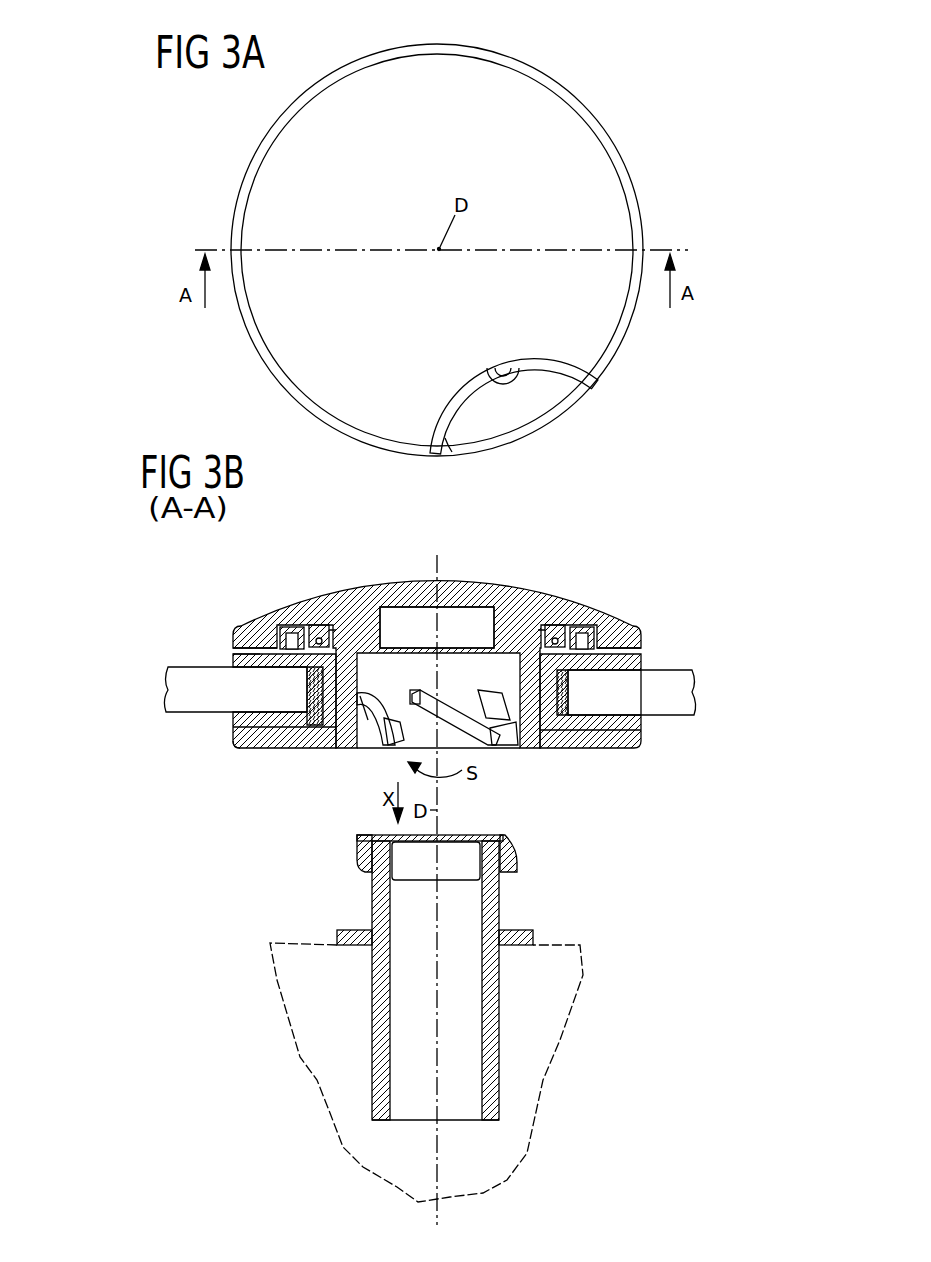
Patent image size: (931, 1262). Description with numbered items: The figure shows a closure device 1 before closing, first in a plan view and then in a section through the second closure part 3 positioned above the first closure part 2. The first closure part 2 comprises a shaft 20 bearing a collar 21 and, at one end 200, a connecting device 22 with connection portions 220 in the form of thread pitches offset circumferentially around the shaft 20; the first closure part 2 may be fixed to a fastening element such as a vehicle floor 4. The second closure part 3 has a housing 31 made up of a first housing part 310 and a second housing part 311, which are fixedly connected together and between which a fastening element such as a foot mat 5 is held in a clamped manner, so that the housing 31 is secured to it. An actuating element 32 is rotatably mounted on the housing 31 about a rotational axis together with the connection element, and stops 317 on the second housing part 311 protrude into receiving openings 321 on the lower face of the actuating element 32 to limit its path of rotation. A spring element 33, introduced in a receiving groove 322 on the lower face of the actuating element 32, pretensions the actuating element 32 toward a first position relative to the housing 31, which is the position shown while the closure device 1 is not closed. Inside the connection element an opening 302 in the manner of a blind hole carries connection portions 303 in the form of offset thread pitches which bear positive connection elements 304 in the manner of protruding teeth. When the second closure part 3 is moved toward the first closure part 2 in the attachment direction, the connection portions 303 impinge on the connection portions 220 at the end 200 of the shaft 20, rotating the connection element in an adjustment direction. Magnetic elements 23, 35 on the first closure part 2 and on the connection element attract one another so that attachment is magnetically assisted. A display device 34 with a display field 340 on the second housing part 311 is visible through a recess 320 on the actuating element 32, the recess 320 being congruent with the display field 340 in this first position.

In FIG. 3A, the closure device 1 is at (421, 241).
In FIG. 3B, the closure device 1 is at (172, 658).
In FIG. 3B, the first closure part 2 is at (464, 998).
In FIG. 3B, the second closure part 3 is at (449, 676).
In FIG. 3B, the vehicle floor 4 is at (315, 1057).
In FIG. 3B, the foot mat 5 is at (180, 703).
In FIG. 3B, the shaft 20 is at (490, 1046).
In FIG. 3B, the collar 21 is at (536, 939).
In FIG. 3B, the connecting device 22 is at (519, 882).
In FIG. 3B, the magnetic element 23 is at (455, 872).
In FIG. 3B, the housing 31 is at (405, 721).
In FIG. 3A, the actuating element 32 is at (267, 187).
In FIG. 3B, the actuating element 32 is at (522, 590).
In FIG. 3B, the spring element 33 is at (327, 640).
In FIG. 3A, the display device 34 is at (530, 429).
In FIG. 3B, the magnetic element 35 is at (470, 618).
In FIG. 3B, the end 200 is at (482, 832).
In FIG. 3B, the connection portions 220 is at (469, 872).
In FIG. 3B, the opening 302 is at (357, 747).
In FIG. 3B, the connection portions 303 is at (395, 740).
In FIG. 3B, the positive connection elements 304 is at (510, 745).
In FIG. 3B, the first housing part 310 is at (235, 733).
In FIG. 3B, the second housing part 311 is at (232, 658).
In FIG. 3B, the stops 317 is at (287, 638).
In FIG. 3A, the recess 320 is at (455, 428).
In FIG. 3B, the receiving openings 321 is at (287, 628).
In FIG. 3B, the receiving groove 322 is at (316, 628).
In FIG. 3A, the display field 340 is at (522, 425).